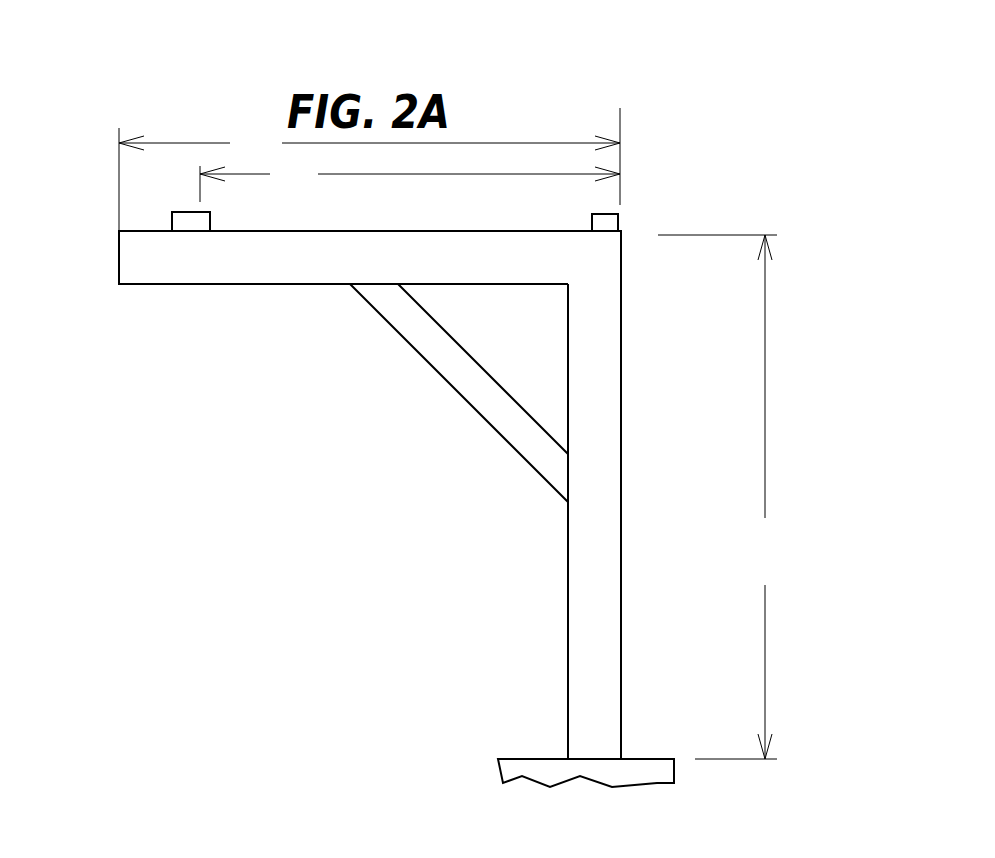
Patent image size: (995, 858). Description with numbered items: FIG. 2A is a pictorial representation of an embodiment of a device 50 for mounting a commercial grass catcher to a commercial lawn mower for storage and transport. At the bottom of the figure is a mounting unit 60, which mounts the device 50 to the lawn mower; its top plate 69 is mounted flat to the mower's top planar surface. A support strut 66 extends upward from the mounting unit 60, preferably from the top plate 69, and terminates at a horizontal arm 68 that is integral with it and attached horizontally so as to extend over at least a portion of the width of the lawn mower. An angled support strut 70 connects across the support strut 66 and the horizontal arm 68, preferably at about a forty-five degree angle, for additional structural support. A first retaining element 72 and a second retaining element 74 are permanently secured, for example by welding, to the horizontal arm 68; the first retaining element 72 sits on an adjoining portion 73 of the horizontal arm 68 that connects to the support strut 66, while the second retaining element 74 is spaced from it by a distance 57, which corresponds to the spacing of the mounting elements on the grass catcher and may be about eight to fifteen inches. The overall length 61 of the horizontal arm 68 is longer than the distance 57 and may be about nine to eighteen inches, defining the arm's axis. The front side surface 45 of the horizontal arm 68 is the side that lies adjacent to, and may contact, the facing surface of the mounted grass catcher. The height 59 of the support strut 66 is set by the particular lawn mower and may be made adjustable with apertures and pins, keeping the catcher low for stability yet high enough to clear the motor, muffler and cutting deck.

The device 50 is at (614, 84).
The front side surface 45 is at (162, 261).
The support strut 66 is at (621, 452).
The angled support strut 70 is at (454, 388).
The top plate 69 is at (662, 759).
The mounting unit 60 is at (481, 783).
The second retaining element 74 is at (188, 212).
The first retaining element 72 is at (604, 219).
The horizontal arm 68 is at (377, 236).
The adjoining portion 73 is at (602, 266).
The overall length 61 is at (369, 169).
The distance 57 is at (410, 181).
The height 59 is at (720, 497).